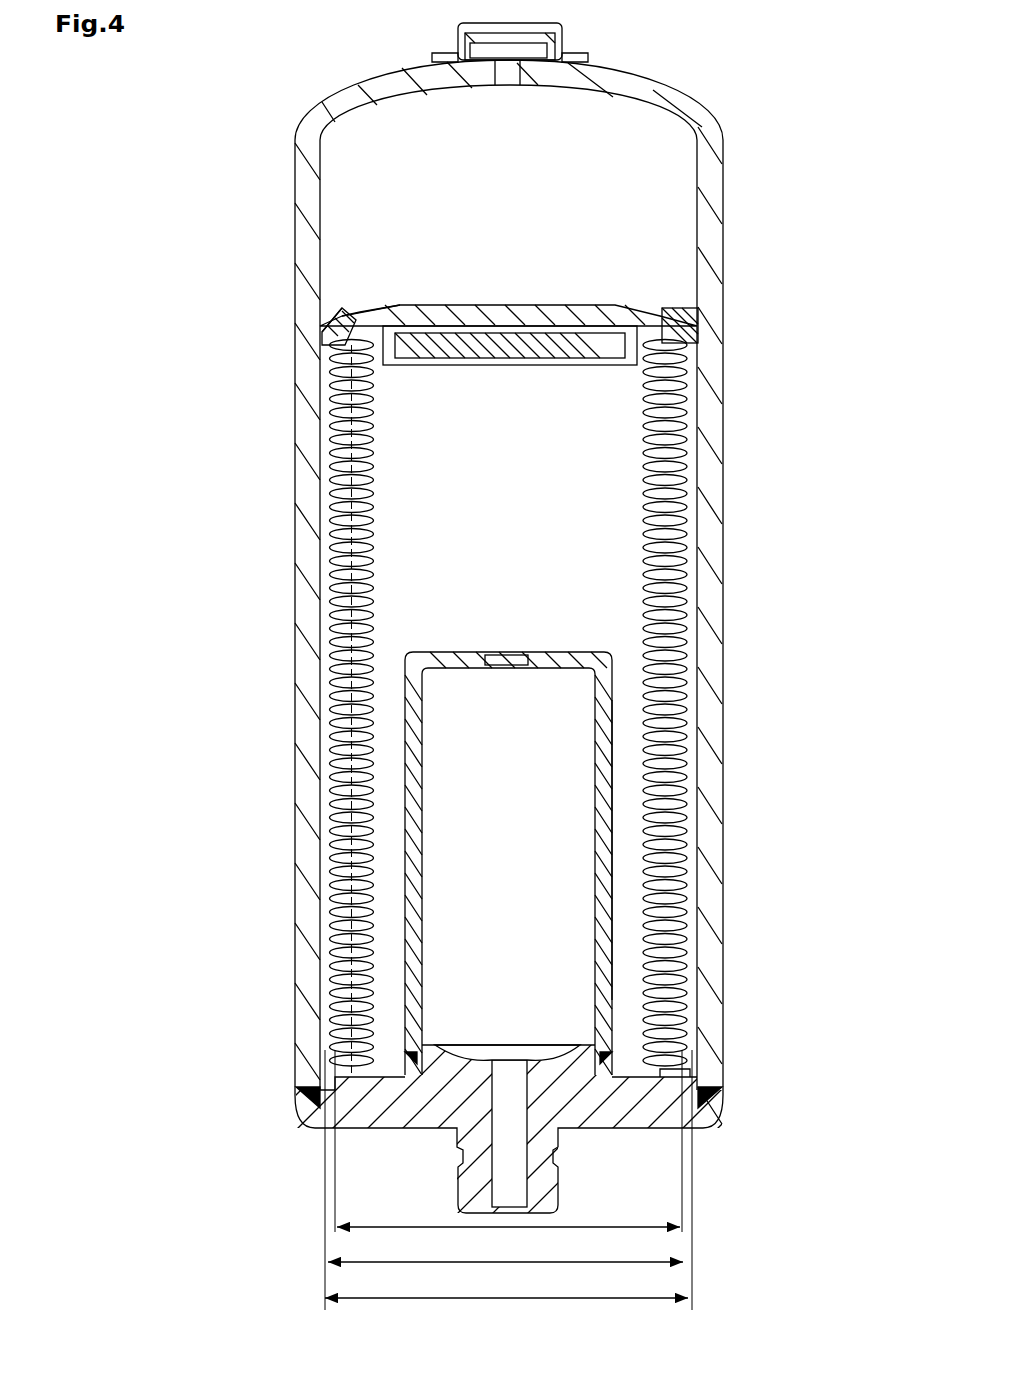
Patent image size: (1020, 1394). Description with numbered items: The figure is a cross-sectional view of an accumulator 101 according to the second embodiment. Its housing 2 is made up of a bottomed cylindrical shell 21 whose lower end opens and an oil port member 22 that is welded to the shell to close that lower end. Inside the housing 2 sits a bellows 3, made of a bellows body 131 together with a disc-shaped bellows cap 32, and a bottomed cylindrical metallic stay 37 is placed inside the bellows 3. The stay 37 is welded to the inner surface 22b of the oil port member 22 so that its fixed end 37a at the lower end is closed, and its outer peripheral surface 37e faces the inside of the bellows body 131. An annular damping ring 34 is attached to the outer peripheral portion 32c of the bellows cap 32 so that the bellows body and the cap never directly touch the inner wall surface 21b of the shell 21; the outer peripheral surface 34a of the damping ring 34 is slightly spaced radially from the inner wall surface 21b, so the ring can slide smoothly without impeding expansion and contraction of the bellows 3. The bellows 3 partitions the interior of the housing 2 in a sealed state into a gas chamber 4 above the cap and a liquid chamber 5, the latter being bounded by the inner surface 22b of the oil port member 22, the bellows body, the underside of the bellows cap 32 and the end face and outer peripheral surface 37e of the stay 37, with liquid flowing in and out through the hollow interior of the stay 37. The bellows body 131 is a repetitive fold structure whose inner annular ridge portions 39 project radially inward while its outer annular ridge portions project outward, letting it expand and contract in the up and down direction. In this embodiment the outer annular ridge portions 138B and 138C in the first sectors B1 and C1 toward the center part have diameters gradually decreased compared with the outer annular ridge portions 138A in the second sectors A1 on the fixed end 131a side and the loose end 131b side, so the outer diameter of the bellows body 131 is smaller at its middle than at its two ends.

The accumulator 101 is at (316, 68).
The housing 2 is at (737, 291).
The shell 21 is at (702, 94).
The inner wall surface of the shell 21b is at (325, 742).
The oil port member 22 is at (715, 1133).
The inner surface of the oil port member 22b is at (632, 1082).
The gas chamber 4 is at (428, 162).
The liquid chamber 5 is at (432, 465).
The bellows cap 32 is at (540, 298).
The outer peripheral portion of the bellows cap 32c is at (349, 312).
The bellows 3 is at (618, 298).
The damping ring 34 is at (333, 298).
The outer peripheral surface of the damping ring 34a is at (322, 332).
The stay 37 is at (455, 646).
The fixed end of the stay 37a is at (441, 1046).
The outer peripheral surface of the stay 37e is at (614, 782).
The inner annular ridge portions 39 is at (645, 626).
The bellows body 131 is at (693, 701).
The fixed end of the bellows body 131a is at (694, 1070).
The loose end of the bellows body 131b is at (693, 357).
The outer annular ridge portions 138A is at (330, 399).
The outer annular ridge portions 138B is at (330, 548).
The outer annular ridge portions 138C is at (328, 645).
The second sectors A1 is at (322, 364).
The first sectors B1 is at (322, 515).
The first sector C1 is at (322, 683).